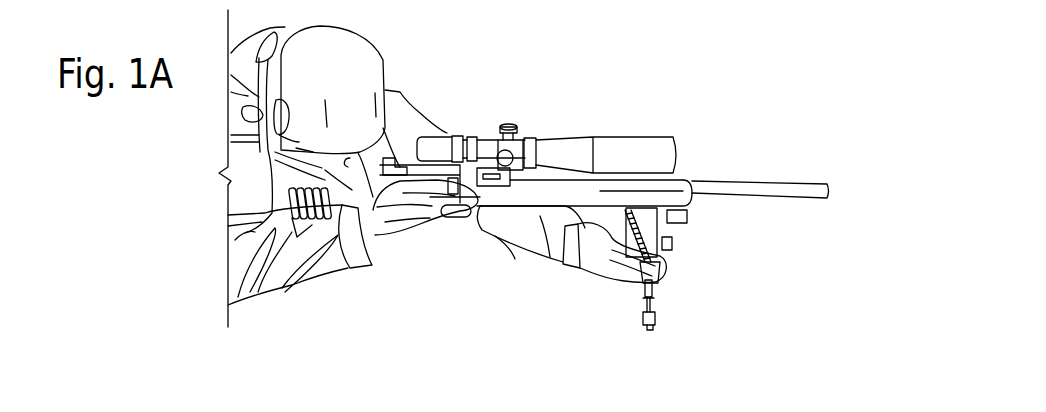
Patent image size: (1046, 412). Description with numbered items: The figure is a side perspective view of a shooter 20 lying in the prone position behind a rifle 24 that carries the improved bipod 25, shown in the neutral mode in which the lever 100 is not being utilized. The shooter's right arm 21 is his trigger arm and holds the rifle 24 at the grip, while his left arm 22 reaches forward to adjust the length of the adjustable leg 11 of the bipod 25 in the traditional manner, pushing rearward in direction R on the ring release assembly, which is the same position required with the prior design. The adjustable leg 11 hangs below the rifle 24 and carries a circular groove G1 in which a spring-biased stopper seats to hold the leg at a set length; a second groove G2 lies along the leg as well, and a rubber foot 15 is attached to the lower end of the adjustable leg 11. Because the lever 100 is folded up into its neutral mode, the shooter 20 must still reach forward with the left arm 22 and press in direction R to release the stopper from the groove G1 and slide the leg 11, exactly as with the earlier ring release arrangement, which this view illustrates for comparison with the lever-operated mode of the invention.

The shooter 20 is at (398, 90).
The right arm 21 is at (383, 236).
The left arm 22 is at (507, 233).
The rifle 24 is at (674, 189).
The improved bipod 25 is at (669, 291).
The direction R is at (668, 272).
The lever 100 is at (640, 275).
The circular groove G1 is at (643, 298).
The second gauge position G2 is at (653, 282).
The adjustable leg 11 is at (653, 287).
The foot 15 is at (643, 327).